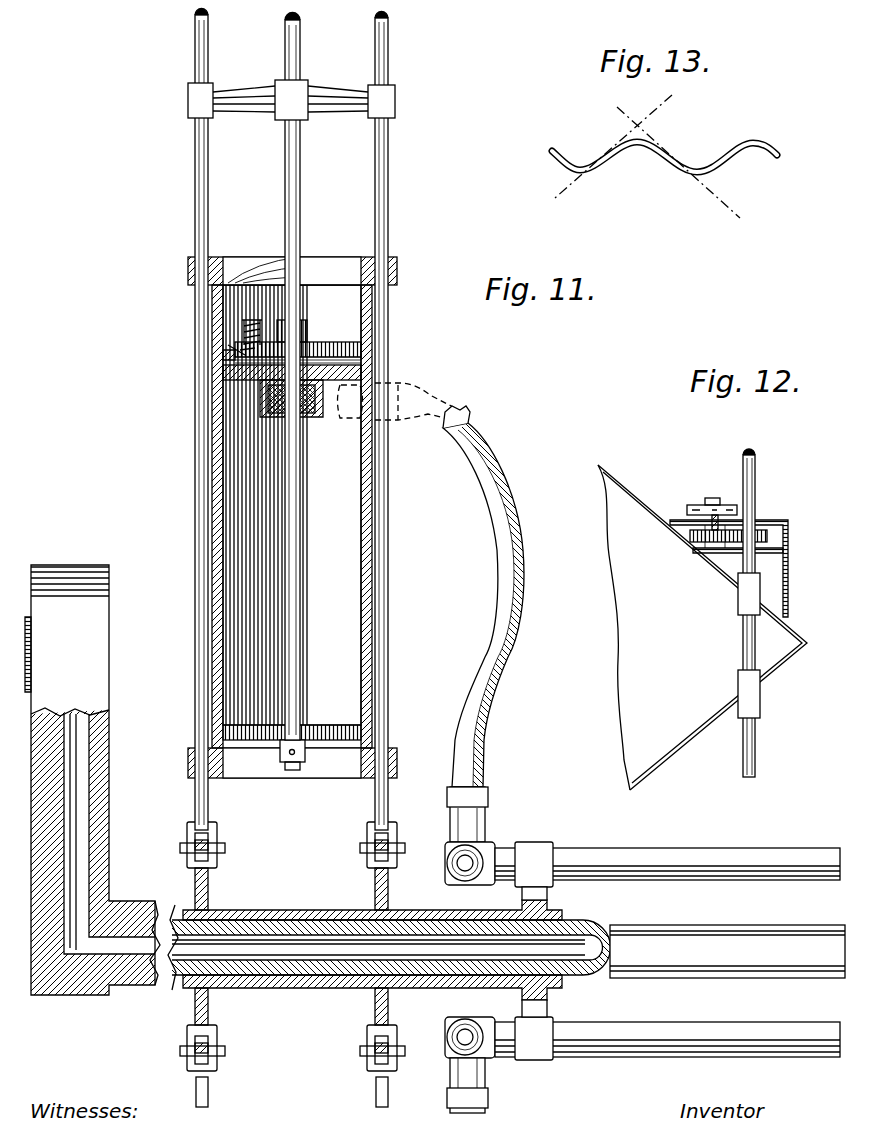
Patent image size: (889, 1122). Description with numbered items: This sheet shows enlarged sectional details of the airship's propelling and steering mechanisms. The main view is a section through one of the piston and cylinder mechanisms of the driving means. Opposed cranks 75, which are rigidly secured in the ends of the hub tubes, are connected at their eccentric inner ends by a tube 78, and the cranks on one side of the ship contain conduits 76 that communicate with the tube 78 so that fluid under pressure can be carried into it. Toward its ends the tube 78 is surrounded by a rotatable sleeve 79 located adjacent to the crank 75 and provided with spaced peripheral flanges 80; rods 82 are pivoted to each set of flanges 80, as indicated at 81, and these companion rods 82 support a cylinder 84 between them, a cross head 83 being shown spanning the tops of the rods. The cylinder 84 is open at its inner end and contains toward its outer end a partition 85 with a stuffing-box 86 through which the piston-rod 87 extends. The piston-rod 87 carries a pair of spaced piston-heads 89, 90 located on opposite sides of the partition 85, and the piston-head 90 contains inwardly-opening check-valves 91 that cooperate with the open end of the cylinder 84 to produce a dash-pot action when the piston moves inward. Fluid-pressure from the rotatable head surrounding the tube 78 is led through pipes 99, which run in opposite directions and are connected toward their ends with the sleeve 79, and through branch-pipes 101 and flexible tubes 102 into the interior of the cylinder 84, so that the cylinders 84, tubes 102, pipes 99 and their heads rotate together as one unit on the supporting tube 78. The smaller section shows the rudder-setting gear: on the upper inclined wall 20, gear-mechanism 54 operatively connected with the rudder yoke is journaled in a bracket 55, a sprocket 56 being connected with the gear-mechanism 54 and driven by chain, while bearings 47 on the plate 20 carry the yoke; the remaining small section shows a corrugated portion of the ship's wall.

In FIG. 12, the upper inclined wall 20 is at (672, 762).
In FIG. 12, the bearings 47 is at (740, 600).
In FIG. 12, the gear-mechanism 54 is at (700, 542).
In FIG. 12, the bracket 55 is at (680, 520).
In FIG. 12, the sprocket 56 is at (730, 502).
In FIG. 11, the cranks 75 is at (97, 797).
In FIG. 11, the conduits 76 is at (78, 882).
In FIG. 11, the tubes 78 is at (177, 977).
In FIG. 11, the rotatable sleeves 79 is at (300, 977).
In FIG. 11, the peripheral flanges 80 is at (210, 895).
In FIG. 11, the pivot 81 is at (218, 850).
In FIG. 11, the rods 82 is at (195, 732).
In FIG. 11, the cross head 83 is at (258, 120).
In FIG. 11, the cylinders 84 is at (372, 575).
In FIG. 11, the partitions 85 is at (362, 367).
In FIG. 11, the stuffing-boxes 86 is at (305, 417).
In FIG. 11, the piston-rods 87 is at (300, 508).
In FIG. 11, the piston-head 89 is at (355, 727).
In FIG. 11, the piston-head 90 is at (355, 344).
In FIG. 11, the check-valves 91 is at (224, 358).
In FIG. 11, the pipes 99 is at (712, 852).
In FIG. 11, the branch-pipes 101 is at (488, 830).
In FIG. 11, the flexible tubes 102 is at (478, 757).